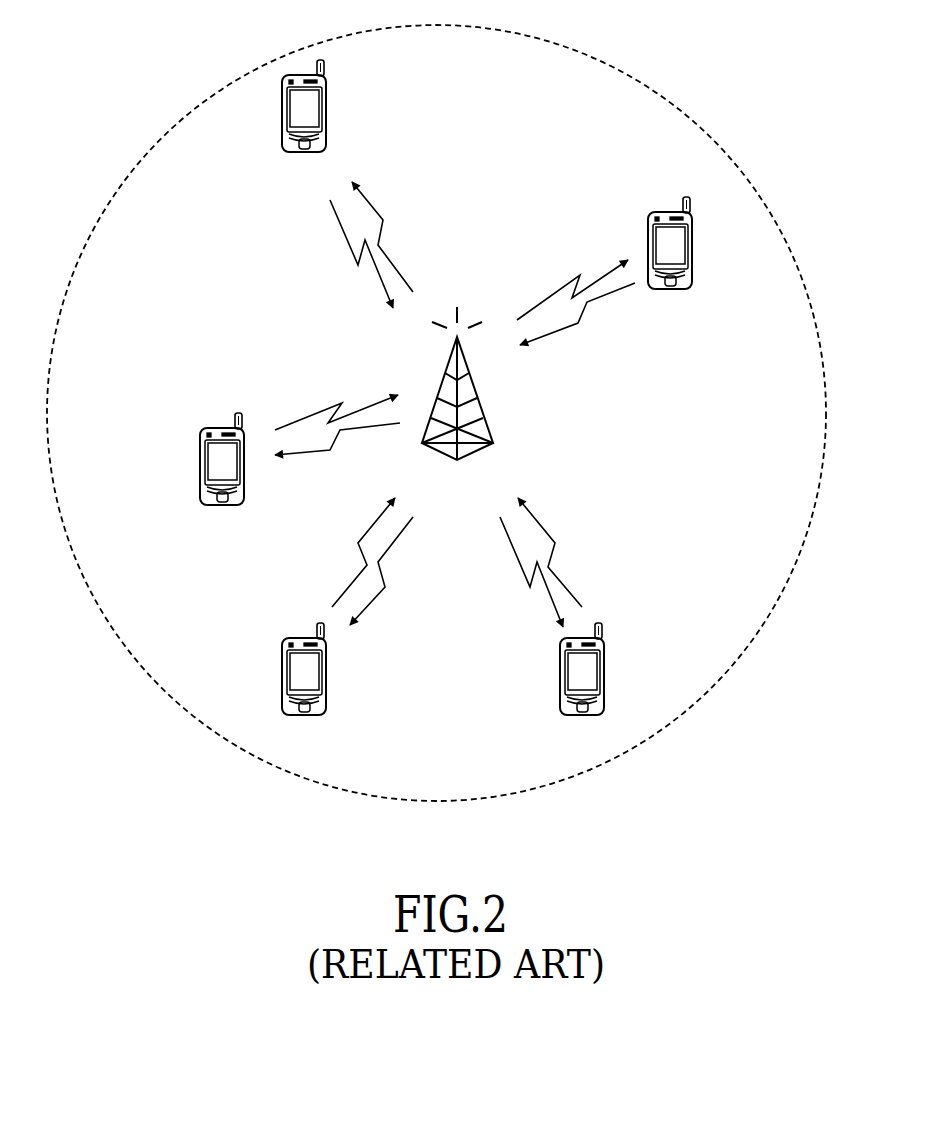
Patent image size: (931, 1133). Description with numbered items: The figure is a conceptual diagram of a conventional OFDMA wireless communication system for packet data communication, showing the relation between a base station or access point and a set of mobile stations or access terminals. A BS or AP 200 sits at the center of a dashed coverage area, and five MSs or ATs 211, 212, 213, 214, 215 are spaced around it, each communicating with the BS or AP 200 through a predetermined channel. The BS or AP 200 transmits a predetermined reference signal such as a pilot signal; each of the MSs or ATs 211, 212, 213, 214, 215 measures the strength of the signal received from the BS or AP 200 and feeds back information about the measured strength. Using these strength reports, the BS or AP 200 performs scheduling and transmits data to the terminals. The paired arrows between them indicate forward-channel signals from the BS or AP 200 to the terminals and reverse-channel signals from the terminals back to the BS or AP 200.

The BS or Access Point (AP) 200 is at (477, 397).
The MS or Access Terminal (AT) 211 is at (200, 467).
The MS or Access Terminal (AT) 212 is at (327, 676).
The MS or Access Terminal (AT) 213 is at (560, 678).
The MS or Access Terminal (AT) 214 is at (692, 245).
The MS or Access Terminal (AT) 215 is at (326, 113).